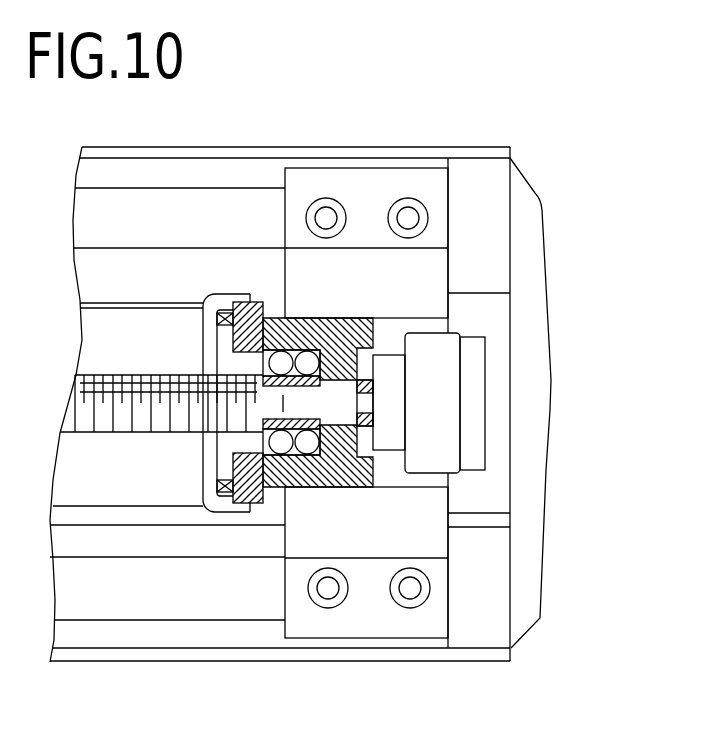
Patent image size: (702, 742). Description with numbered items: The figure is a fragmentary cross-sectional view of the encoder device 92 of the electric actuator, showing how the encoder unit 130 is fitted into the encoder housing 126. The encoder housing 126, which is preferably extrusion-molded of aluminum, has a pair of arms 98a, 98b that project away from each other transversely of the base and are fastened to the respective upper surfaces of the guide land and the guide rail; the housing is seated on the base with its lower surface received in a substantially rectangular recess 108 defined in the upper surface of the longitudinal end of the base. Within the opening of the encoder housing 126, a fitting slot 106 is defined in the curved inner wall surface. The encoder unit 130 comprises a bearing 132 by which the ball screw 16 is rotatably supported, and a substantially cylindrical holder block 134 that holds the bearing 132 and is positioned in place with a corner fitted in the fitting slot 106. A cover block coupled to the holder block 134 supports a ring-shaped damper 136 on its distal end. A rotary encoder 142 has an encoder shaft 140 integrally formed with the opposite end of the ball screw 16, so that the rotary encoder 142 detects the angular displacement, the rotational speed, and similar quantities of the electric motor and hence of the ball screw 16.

The encoder device 92 is at (262, 108).
The fitting slot 106 is at (302, 318).
The arm 98a is at (373, 182).
The arm 98b is at (358, 620).
The bearing 132 is at (250, 300).
The encoder housing 126 is at (433, 273).
The encoder unit 130 is at (494, 369).
The rotary encoder 142 is at (438, 422).
The ball screw 16 is at (157, 375).
The recess 108 is at (207, 470).
The encoder shaft 140 is at (364, 447).
The damper 136 is at (222, 493).
The holder block 134 is at (297, 490).